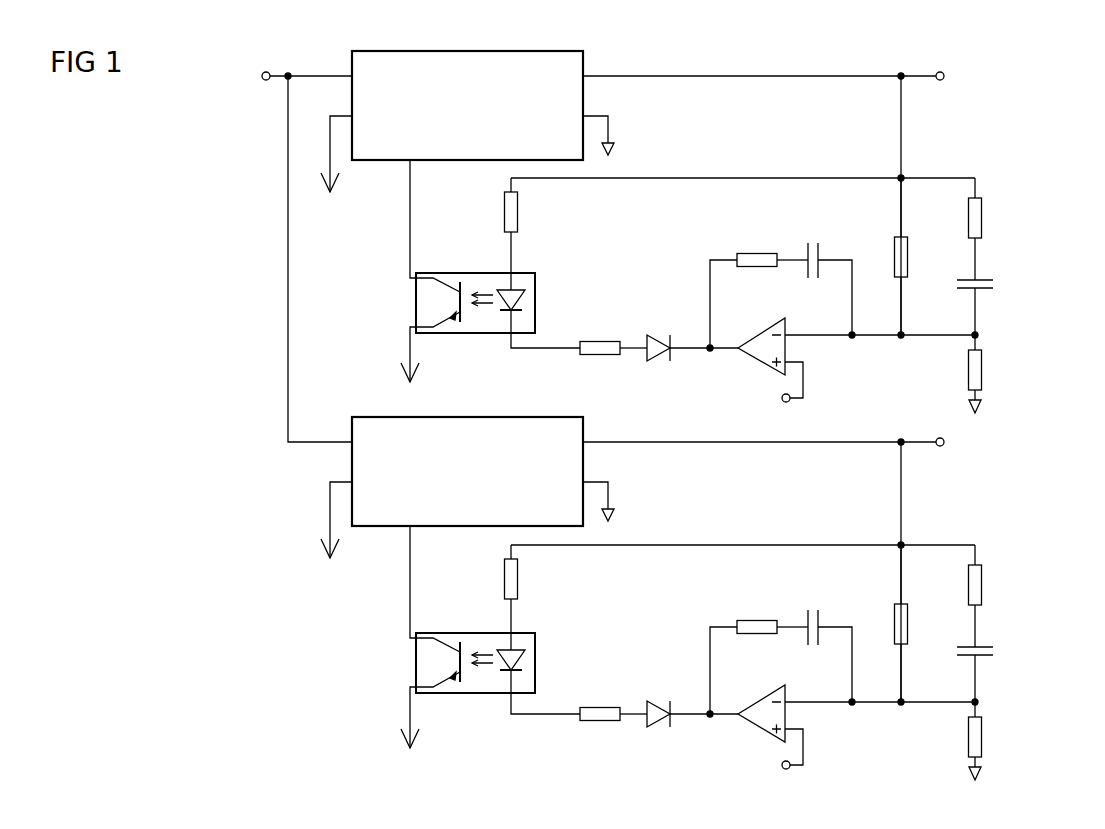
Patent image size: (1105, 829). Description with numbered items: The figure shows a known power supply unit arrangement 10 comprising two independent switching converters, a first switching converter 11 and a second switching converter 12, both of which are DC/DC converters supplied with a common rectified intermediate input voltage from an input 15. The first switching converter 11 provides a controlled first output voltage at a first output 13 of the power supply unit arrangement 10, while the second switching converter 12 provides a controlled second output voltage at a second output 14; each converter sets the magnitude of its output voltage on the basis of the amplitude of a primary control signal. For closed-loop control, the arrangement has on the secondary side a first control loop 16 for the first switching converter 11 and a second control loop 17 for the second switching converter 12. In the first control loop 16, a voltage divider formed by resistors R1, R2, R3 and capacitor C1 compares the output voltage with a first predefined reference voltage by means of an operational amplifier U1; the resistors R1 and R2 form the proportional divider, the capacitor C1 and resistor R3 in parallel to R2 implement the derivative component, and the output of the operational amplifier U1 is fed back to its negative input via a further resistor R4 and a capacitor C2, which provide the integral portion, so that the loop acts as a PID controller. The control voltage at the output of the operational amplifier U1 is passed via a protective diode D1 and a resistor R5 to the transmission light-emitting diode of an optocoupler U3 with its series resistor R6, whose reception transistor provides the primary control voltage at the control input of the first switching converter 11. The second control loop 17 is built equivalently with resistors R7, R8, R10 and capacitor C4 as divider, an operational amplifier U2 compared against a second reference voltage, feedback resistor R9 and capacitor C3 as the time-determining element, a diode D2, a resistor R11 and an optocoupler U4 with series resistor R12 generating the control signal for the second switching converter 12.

The power supply unit arrangement 10 is at (318, 736).
The first switching converter 11 is at (584, 64).
The second switching converter 12 is at (471, 414).
The first output 13 is at (945, 89).
The second output 14 is at (939, 433).
The input 15 is at (266, 86).
The first control loop 16 is at (999, 179).
The second control loop 17 is at (1011, 641).
The resistor R1 is at (984, 371).
The resistor R2 is at (909, 255).
The resistor R3 is at (984, 219).
The resistor R4 is at (757, 252).
The resistor R5 is at (600, 340).
The series resistor R6 is at (504, 215).
The resistor R7 is at (1003, 737).
The resistor R8 is at (929, 623).
The resistor R9 is at (757, 603).
The resistor R10 is at (1009, 585).
The resistor R11 is at (602, 689).
The resistor R12 is at (477, 597).
The capacitor C1 is at (996, 283).
The capacitor C2 is at (813, 243).
The capacitor C3 is at (821, 603).
The capacitor C4 is at (1005, 648).
The protective diode D1 is at (659, 335).
The diode D2 is at (663, 692).
The operational amplifier U1 is at (760, 330).
The operational amplifier U2 is at (777, 715).
The optocoupler U3 is at (416, 300).
The optocoupler U4 is at (447, 637).